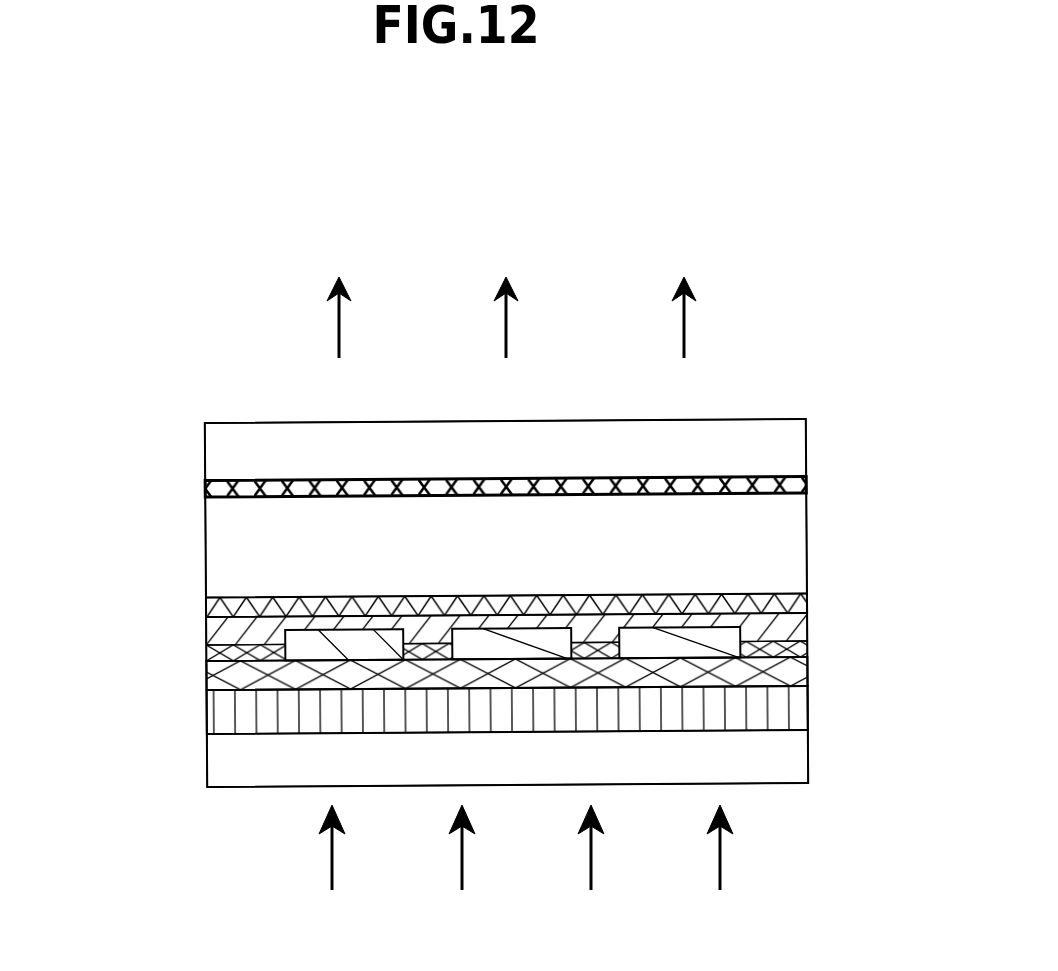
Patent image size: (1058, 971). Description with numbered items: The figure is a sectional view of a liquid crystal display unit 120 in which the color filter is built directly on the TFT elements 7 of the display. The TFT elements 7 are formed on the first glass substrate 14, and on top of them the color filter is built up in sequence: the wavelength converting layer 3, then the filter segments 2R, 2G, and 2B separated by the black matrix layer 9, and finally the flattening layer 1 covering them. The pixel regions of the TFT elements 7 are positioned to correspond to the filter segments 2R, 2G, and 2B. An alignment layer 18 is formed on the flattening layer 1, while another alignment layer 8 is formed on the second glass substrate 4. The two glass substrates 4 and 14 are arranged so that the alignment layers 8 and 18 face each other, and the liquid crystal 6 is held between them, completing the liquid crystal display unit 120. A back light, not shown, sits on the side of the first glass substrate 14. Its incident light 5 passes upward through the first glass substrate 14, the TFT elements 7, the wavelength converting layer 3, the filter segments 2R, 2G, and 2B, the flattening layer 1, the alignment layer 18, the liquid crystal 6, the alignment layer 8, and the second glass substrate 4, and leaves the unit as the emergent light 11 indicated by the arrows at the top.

The liquid crystal display unit 120 is at (785, 297).
The second glass substrate 4 is at (272, 461).
The alignment layer 8 is at (224, 489).
The liquid crystal 6 is at (785, 558).
The alignment layer 18 is at (211, 606).
The flattening layer 1 is at (222, 637).
The filter segment 2G is at (353, 640).
The filter segment 2R is at (508, 632).
The filter segment 2B is at (690, 625).
The black matrix layer 9 is at (793, 650).
The wavelength converting layer 3 is at (797, 670).
The TFT elements 7 is at (795, 712).
The first glass substrate 14 is at (227, 762).
The emergent light 11 is at (511, 286).
The incident light 5 is at (526, 877).